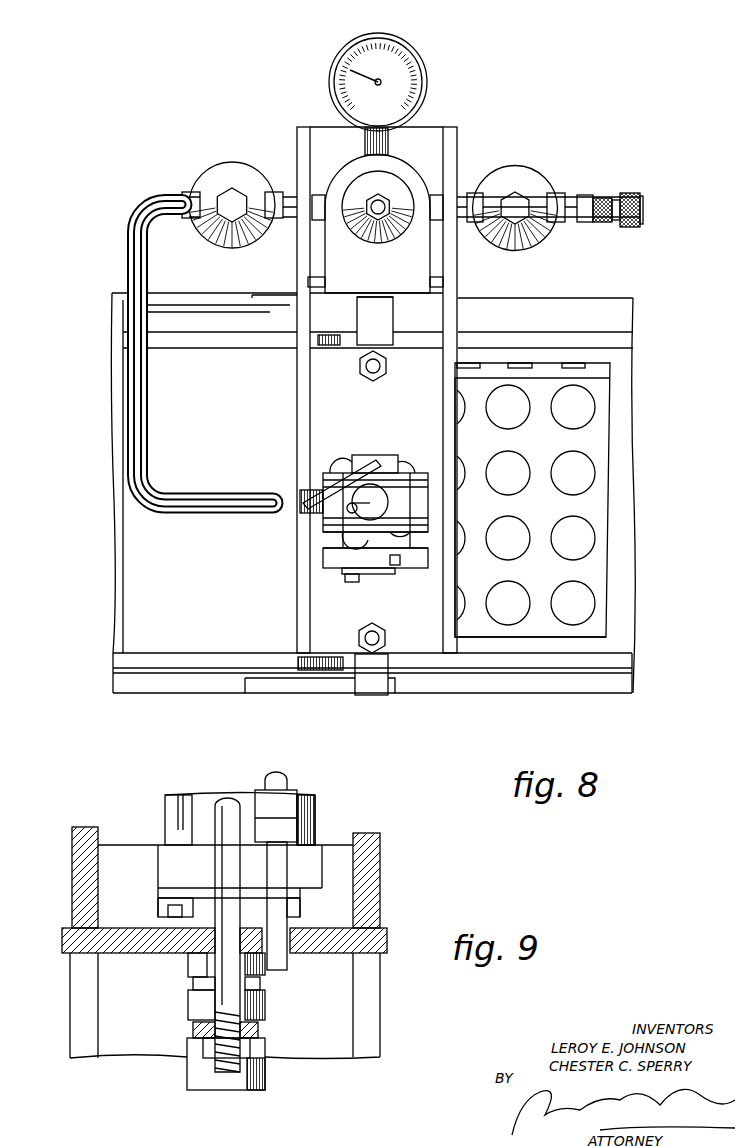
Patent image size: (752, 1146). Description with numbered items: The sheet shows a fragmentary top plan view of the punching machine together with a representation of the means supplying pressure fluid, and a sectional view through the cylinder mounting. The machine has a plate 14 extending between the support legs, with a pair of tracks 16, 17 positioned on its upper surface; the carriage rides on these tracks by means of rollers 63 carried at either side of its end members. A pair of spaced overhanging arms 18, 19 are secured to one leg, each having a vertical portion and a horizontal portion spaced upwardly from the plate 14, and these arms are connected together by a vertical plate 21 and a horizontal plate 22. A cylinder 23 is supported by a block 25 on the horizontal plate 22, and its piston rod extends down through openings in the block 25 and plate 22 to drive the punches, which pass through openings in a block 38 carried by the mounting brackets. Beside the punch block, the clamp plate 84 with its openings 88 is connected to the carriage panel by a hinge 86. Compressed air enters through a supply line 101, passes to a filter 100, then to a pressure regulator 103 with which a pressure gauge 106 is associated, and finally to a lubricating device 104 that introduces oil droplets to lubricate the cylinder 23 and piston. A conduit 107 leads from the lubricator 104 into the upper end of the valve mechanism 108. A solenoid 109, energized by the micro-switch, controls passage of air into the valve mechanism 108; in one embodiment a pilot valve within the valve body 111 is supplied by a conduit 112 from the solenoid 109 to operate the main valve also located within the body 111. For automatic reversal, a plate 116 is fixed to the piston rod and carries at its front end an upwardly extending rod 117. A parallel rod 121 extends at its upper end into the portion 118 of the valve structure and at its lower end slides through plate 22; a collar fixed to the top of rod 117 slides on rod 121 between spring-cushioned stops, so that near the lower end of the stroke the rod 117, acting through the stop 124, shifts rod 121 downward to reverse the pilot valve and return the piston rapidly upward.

In FIG. 8, the plate 14 is at (620, 557).
In FIG. 8, the track 16 is at (200, 665).
In FIG. 8, the track 17 is at (245, 340).
In FIG. 8, the overhanging arm 18 is at (452, 128).
In FIG. 9, the overhanging arm 18 is at (365, 1023).
In FIG. 8, the overhanging arm 19 is at (303, 125).
In FIG. 9, the overhanging arm 19 is at (78, 990).
In FIG. 9, the vertical plate 21 is at (338, 977).
In FIG. 8, the horizontal plate 22 is at (402, 392).
In FIG. 9, the horizontal plate 22 is at (375, 945).
In FIG. 9, the cylinder 23 is at (173, 810).
In FIG. 9, the block 25 is at (202, 918).
In FIG. 8, the block 38 is at (375, 687).
In FIG. 8, the roller 63 is at (322, 343).
In FIG. 8, the clamp plate 84 is at (597, 500).
In FIG. 8, the hinge 86 is at (573, 363).
In FIG. 8, the opening 88 is at (592, 457).
In FIG. 8, the filter 100 is at (515, 173).
In FIG. 8, the supply line 101 is at (572, 197).
In FIG. 8, the pressure regulator 103 is at (402, 170).
In FIG. 8, the lubricating device 104 is at (233, 173).
In FIG. 8, the pressure gauge 106 is at (412, 47).
In FIG. 8, the conduit 107 is at (143, 392).
In FIG. 8, the valve mechanism 108 is at (405, 475).
In FIG. 8, the solenoid 109 is at (387, 462).
In FIG. 8, the valve body 111 is at (352, 525).
In FIG. 8, the conduit 112 is at (320, 477).
In FIG. 9, the plate 116 is at (193, 1028).
In FIG. 9, the rod 117 is at (225, 810).
In FIG. 8, the portion of valve structure 118 is at (408, 560).
In FIG. 9, the rod 121 is at (280, 882).
In FIG. 9, the stop 124 is at (288, 813).